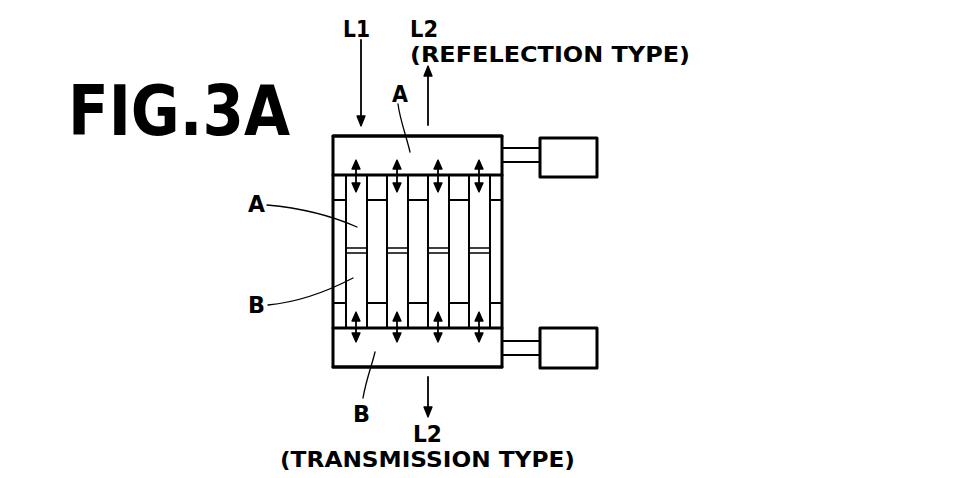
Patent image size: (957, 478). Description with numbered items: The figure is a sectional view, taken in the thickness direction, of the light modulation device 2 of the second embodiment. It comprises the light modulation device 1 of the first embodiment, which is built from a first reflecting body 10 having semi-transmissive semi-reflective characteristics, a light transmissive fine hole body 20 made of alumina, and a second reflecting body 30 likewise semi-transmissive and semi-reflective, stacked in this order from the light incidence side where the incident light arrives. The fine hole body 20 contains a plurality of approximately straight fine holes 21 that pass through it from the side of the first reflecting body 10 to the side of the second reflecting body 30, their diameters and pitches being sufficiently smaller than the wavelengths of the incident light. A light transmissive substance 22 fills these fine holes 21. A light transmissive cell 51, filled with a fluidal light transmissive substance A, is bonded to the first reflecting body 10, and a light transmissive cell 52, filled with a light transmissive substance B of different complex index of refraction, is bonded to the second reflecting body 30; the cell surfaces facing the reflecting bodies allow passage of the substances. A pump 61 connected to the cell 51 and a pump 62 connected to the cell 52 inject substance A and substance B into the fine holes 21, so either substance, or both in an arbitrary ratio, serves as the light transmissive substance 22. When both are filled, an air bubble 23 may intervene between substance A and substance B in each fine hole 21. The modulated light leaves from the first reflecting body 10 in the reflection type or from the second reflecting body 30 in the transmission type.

The light modulation device 1 is at (583, 187).
The light modulation device 2 is at (694, 190).
The first reflecting body 10 is at (512, 189).
The light transmissive fine hole body 20 is at (512, 233).
The fine hole 21 is at (490, 274).
The light transmissive substance 22 is at (349, 306).
The air bubble 23 is at (357, 250).
The second reflecting body 30 is at (512, 309).
The light transmissive cell 51 is at (480, 135).
The light transmissive cell 52 is at (485, 368).
The pump 61 is at (585, 157).
The pump 62 is at (585, 347).